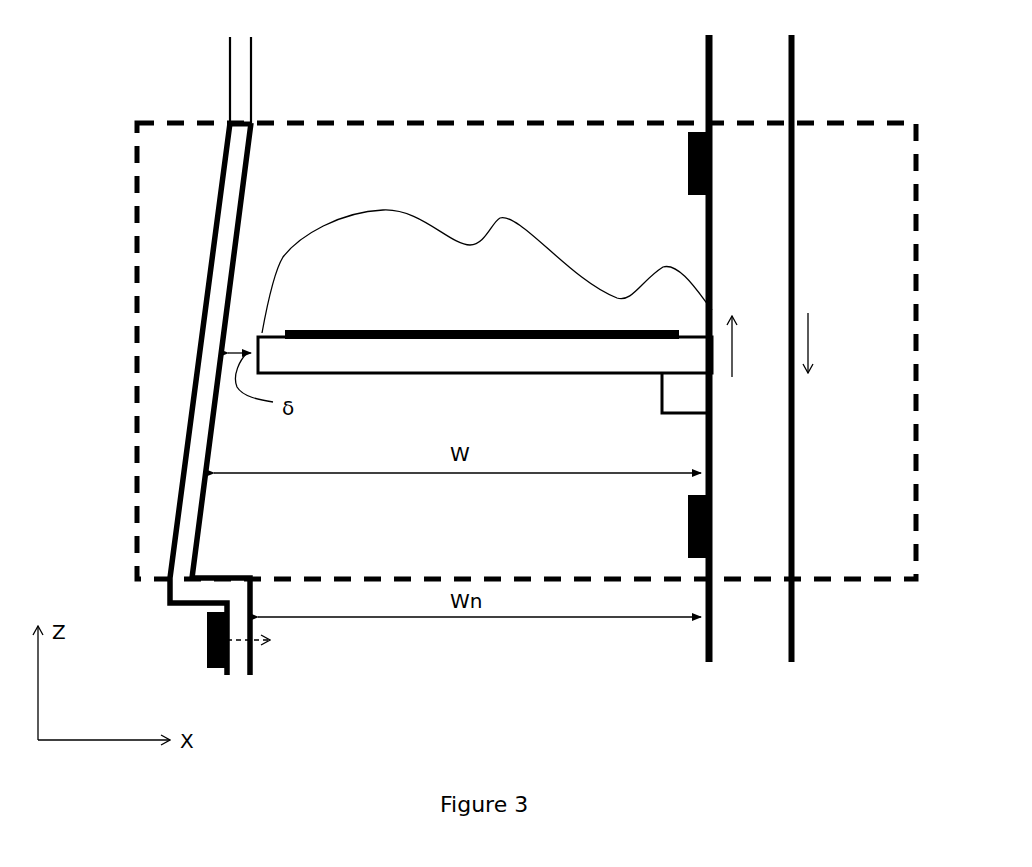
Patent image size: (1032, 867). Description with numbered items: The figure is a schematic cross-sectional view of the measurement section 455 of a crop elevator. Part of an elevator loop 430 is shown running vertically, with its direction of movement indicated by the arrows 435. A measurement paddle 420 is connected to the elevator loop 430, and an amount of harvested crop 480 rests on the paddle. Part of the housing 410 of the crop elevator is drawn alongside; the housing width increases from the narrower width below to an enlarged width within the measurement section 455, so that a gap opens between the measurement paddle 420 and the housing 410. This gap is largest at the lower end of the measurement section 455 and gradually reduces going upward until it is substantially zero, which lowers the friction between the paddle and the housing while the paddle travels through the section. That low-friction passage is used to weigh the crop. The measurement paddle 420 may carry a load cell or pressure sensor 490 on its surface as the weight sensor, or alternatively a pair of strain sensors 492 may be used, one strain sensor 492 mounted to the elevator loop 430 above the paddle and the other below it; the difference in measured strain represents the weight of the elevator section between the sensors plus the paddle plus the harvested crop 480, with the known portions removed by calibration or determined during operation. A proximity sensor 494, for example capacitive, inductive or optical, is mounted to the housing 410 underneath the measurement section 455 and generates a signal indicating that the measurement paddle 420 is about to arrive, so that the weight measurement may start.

The housing 410 is at (208, 403).
The measurement paddle 420 is at (343, 350).
The elevator loop 430 is at (792, 87).
The arrows 435 is at (732, 350).
The measurement section 455 is at (398, 122).
The harvested crop 480 is at (511, 257).
The load cell or pressure sensor 490 is at (445, 328).
The strain sensors 492 is at (689, 152).
The proximity sensor 494 is at (207, 632).